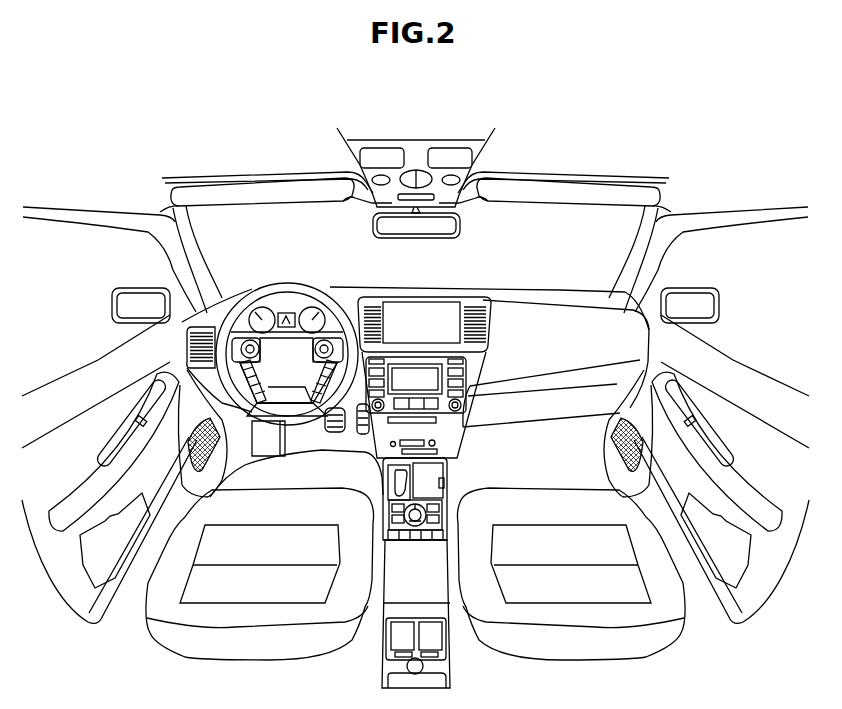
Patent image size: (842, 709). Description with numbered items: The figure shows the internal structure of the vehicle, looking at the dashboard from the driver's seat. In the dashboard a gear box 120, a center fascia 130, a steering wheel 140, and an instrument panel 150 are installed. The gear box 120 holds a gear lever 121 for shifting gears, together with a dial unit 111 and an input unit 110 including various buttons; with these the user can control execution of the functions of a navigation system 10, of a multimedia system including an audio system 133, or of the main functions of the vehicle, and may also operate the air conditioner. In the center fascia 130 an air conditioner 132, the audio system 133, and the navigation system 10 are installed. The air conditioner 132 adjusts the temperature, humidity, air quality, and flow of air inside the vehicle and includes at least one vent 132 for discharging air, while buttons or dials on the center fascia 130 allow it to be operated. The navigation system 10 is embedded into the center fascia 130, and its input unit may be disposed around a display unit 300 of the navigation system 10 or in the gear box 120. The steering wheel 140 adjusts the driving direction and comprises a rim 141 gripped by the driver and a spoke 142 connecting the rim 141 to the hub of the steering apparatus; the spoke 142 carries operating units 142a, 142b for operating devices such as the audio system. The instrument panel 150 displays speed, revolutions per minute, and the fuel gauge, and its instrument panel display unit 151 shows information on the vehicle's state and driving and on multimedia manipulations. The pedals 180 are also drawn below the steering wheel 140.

The navigation system 10 is at (457, 291).
The input unit 110 is at (440, 518).
The dial unit 111 is at (388, 512).
The gear box 120 is at (458, 490).
The gear lever 121 is at (383, 472).
The center fascia 130 is at (510, 276).
The air conditioner 132 is at (487, 325).
The audio system 133 is at (478, 371).
The steering wheel 140 is at (292, 268).
The rim 141 is at (263, 287).
The spoke 142 is at (268, 357).
The operating unit 142a is at (237, 312).
The operating unit 142b is at (345, 303).
The instrument panel 150 is at (294, 300).
The instrument panel display unit 151 is at (298, 318).
The pedals 180 is at (330, 438).
The display unit 300 is at (430, 302).